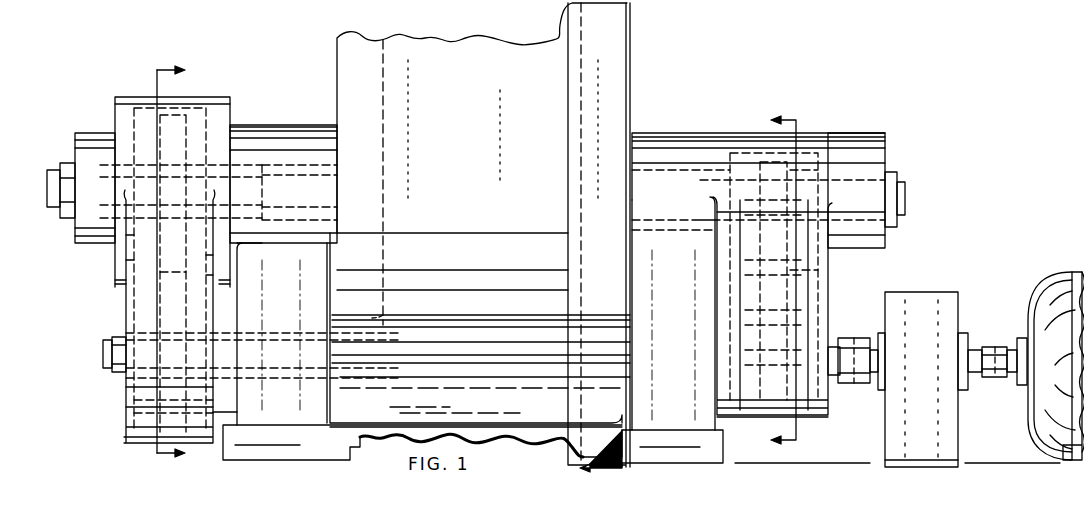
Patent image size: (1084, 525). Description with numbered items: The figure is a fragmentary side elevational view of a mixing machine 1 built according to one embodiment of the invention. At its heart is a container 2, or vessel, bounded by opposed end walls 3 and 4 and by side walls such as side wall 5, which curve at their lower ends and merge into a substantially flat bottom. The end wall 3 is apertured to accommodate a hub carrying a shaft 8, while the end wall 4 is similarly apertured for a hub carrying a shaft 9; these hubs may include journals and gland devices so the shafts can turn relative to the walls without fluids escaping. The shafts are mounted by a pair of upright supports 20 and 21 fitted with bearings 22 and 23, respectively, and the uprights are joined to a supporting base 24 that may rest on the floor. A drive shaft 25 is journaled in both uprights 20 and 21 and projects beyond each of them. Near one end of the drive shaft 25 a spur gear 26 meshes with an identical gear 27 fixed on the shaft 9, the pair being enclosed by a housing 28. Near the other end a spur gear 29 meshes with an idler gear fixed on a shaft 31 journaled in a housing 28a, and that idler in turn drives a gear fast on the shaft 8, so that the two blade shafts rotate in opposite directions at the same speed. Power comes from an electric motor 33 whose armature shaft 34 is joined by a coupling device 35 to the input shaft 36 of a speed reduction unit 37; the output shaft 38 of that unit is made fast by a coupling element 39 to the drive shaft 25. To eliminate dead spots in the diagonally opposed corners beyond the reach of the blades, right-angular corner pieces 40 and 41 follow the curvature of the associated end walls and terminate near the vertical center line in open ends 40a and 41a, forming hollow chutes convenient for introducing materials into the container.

The mixing machine 1 is at (705, 104).
The container 2 is at (634, 31).
The end wall 3 is at (590, 455).
The end wall 4 is at (179, 263).
The side wall 5 is at (772, 281).
The shaft 8 is at (906, 187).
The shaft 9 is at (47, 182).
The upright support 20 is at (680, 276).
The upright support 21 is at (293, 271).
The bearing 22 is at (660, 165).
The bearing 23 is at (282, 150).
The supporting base 24 is at (338, 434).
The drive shaft 25 is at (454, 355).
The spur gear 26 is at (221, 303).
The gear 27 is at (232, 126).
The housing 28 is at (128, 285).
The housing 28a is at (825, 308).
The spur gear 29 is at (796, 419).
The shaft 31 is at (814, 281).
The electric motor 33 is at (1050, 290).
The armature shaft 34 is at (1006, 340).
The coupling device 35 is at (1008, 380).
The input shaft 36 is at (971, 344).
The speed reduction unit 37 is at (934, 306).
The output shaft 38 is at (874, 386).
The coupling element 39 is at (846, 338).
The corner piece 40 is at (560, 59).
The open end 40a is at (578, 317).
The corner piece 41 is at (386, 91).
The open end 41a is at (386, 312).